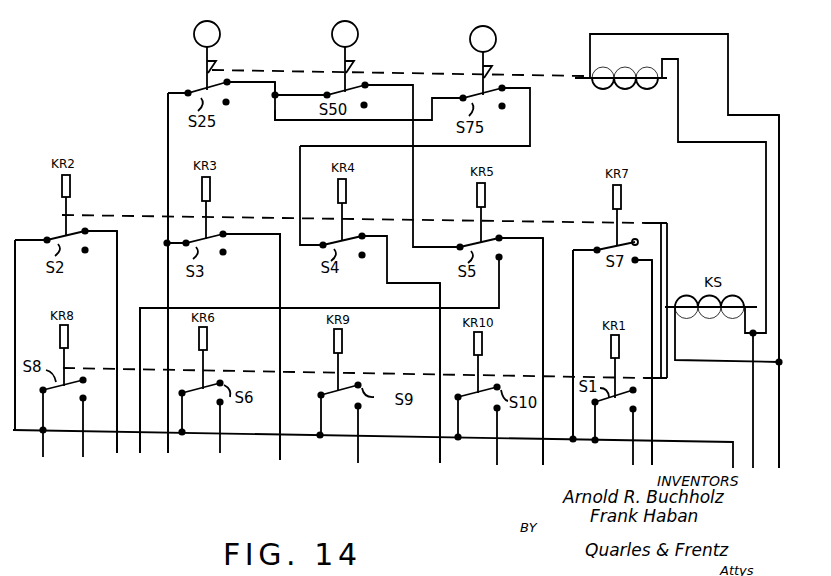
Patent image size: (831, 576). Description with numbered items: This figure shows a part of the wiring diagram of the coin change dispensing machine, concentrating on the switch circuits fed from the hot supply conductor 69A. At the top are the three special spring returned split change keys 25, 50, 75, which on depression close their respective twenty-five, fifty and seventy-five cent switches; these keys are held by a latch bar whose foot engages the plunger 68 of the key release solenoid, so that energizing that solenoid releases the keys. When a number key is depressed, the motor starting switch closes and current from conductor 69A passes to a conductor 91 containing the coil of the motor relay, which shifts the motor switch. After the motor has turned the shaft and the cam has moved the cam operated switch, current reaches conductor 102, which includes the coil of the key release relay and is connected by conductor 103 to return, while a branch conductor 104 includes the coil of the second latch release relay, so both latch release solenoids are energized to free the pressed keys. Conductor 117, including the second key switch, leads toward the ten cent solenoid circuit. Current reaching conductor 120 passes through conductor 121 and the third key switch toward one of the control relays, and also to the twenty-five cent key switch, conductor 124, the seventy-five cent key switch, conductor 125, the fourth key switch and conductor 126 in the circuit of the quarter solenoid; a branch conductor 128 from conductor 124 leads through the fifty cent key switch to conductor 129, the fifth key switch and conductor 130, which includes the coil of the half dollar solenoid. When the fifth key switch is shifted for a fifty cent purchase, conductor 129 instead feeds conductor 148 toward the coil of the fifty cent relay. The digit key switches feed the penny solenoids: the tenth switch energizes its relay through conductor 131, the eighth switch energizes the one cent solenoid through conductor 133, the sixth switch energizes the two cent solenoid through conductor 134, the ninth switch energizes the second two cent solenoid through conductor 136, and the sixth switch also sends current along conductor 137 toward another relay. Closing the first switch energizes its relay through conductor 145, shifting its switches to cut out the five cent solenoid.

The special spring returned split change key 25 is at (207, 48).
The special spring returned split change key 50 is at (345, 49).
The special spring returned split change key 75 is at (483, 53).
The plunger 68 is at (584, 84).
The hot supply conductor 69A is at (684, 441).
The conductor 91 is at (573, 305).
The conductor 102 is at (779, 468).
The conductor 103 is at (752, 383).
The branch conductor 104 is at (727, 359).
The conductor 117 is at (16, 299).
The conductor 120 is at (167, 453).
The conductor 121 is at (278, 288).
The conductor 124 is at (287, 120).
The conductor 125 is at (530, 147).
The conductor 126 is at (438, 461).
The branch conductor 128 is at (303, 96).
The conductor 129 is at (412, 176).
The conductor 130 is at (543, 340).
The conductor 131 is at (497, 465).
The conductor 133 is at (83, 457).
The conductor 134 is at (220, 453).
The conductor 136 is at (358, 463).
The conductor 137 is at (43, 457).
The conductor 145 is at (633, 465).
The conductor 148 is at (364, 307).